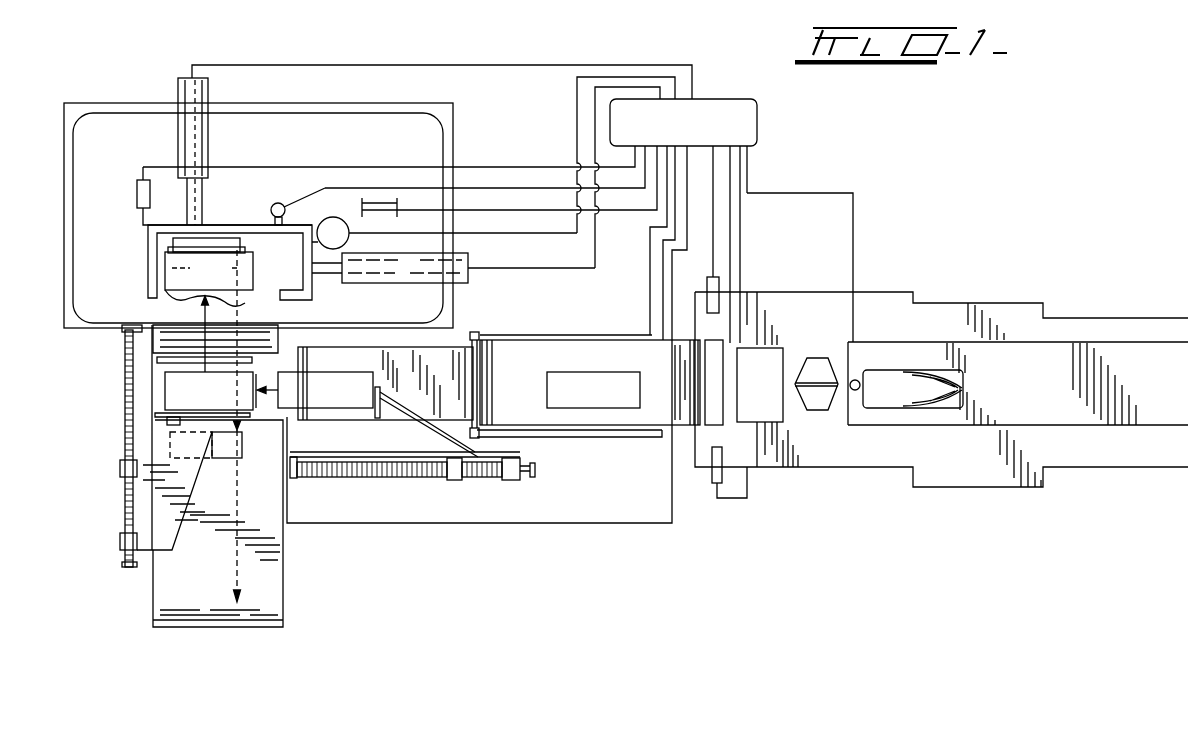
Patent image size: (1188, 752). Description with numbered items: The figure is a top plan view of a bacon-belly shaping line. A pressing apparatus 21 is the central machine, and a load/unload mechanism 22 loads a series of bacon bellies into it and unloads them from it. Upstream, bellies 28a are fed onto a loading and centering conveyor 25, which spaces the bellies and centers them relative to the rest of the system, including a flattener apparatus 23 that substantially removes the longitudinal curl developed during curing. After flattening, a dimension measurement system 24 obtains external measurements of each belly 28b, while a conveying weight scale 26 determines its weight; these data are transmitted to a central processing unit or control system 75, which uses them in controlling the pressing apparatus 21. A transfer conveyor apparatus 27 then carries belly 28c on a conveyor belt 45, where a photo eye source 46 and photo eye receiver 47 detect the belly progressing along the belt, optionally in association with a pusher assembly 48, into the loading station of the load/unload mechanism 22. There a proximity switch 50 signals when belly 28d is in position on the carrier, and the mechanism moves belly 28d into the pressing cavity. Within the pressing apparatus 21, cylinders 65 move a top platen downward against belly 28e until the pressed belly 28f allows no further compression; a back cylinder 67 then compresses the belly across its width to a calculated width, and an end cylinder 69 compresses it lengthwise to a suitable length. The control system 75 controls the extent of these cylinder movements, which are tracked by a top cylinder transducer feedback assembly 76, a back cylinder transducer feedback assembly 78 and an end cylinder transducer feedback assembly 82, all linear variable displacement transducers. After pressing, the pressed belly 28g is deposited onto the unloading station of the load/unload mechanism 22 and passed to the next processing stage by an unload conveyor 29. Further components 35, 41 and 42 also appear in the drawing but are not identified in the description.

The pressing apparatus 21 is at (468, 150).
The load/unload mechanism 22 is at (151, 398).
The flattener apparatus 23 is at (820, 293).
The dimension measurement system 24 is at (722, 307).
The loading and centering conveyor 25 is at (1048, 342).
The conveying weight scale 26 is at (583, 337).
The transfer conveyor apparatus 27 is at (455, 347).
The bacon belly 28a is at (870, 399).
The bacon belly 28b is at (611, 400).
The bacon belly 28c is at (340, 400).
The bacon belly 28d is at (190, 400).
The bacon belly 28e is at (196, 281).
The bacon belly 28f is at (228, 238).
The pressed bacon belly 28g is at (243, 447).
The unload conveyor 29 is at (186, 579).
The sensor 35 is at (853, 390).
The coupling 41 is at (723, 398).
The limit switch 42 is at (707, 290).
The conveyor belt 45 is at (411, 376).
The photo eye source 46 is at (479, 337).
The photo eye receiver 47 is at (478, 439).
The pusher assembly 48 is at (397, 478).
The proximity switch 50 is at (167, 421).
The cylinders 65 is at (327, 249).
The back cylinder 67 is at (181, 95).
The end cylinder 69 is at (394, 283).
The control system 75 is at (662, 133).
The top cylinder transducer feedback assembly 76 is at (275, 225).
The back cylinder transducer feedback assembly 78 is at (136, 194).
The end cylinder transducer feedback assembly 82 is at (378, 198).